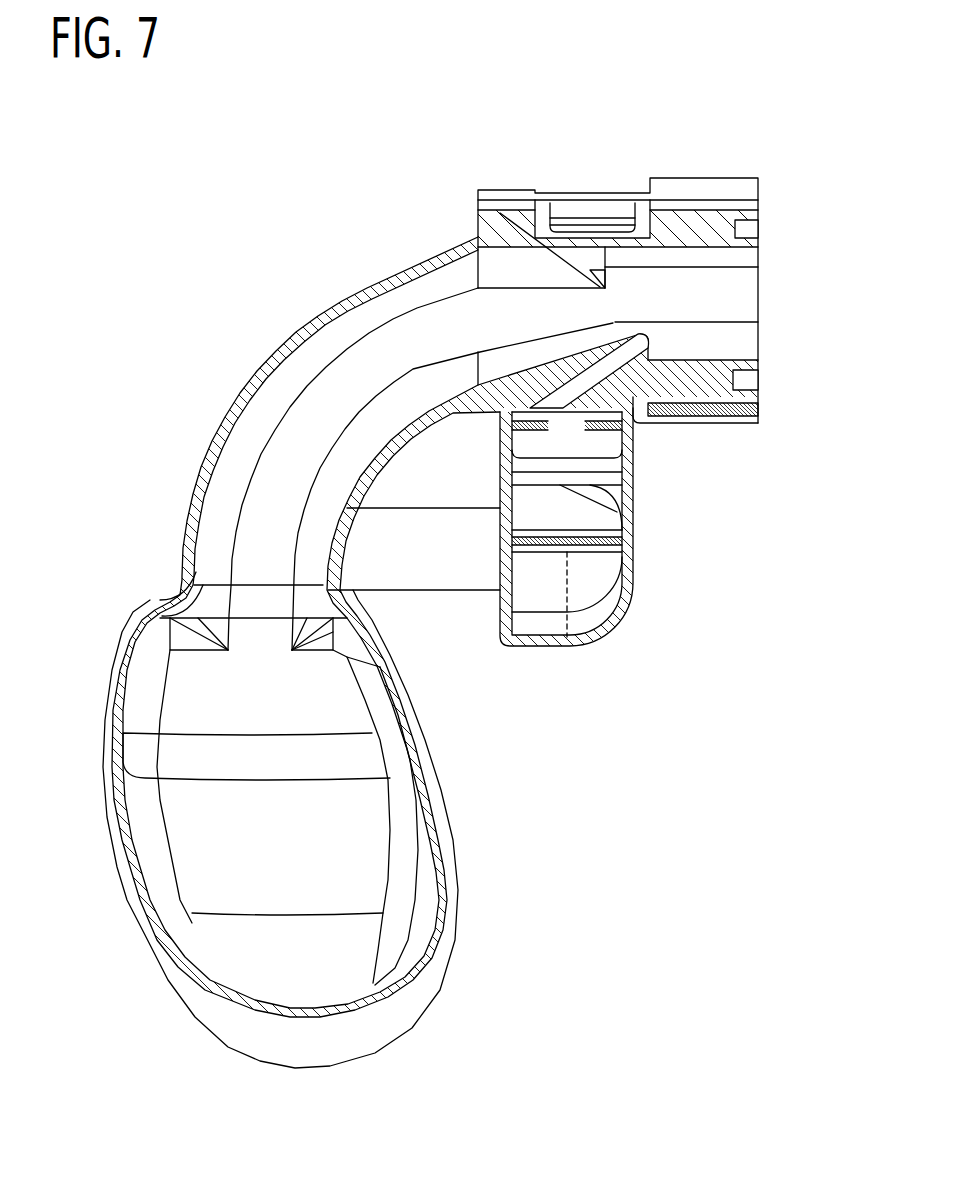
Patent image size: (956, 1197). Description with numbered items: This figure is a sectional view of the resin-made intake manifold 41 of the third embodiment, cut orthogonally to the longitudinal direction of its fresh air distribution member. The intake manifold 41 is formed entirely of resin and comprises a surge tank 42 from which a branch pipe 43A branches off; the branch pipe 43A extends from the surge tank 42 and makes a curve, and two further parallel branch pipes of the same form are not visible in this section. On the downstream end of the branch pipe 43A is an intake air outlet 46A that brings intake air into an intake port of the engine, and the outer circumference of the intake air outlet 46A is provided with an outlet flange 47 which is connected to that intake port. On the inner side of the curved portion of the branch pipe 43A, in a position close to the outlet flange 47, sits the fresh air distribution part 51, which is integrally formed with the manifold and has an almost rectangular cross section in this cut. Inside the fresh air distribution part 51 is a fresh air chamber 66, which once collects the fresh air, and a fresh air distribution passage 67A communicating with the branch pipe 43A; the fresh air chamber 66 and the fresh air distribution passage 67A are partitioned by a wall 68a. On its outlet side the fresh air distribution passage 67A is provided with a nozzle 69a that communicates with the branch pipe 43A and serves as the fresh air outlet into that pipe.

The intake manifold 41 is at (306, 200).
The surge tank 42 is at (330, 1058).
The branch pipe 43A is at (303, 325).
The intake air outlet 46A is at (758, 258).
The outlet flange 47 is at (710, 178).
The fresh air distribution part 51 is at (630, 630).
The fresh air chamber 66 is at (577, 592).
The fresh air distribution passage 67A is at (585, 447).
The wall 68a is at (630, 490).
The nozzle 69a is at (648, 348).